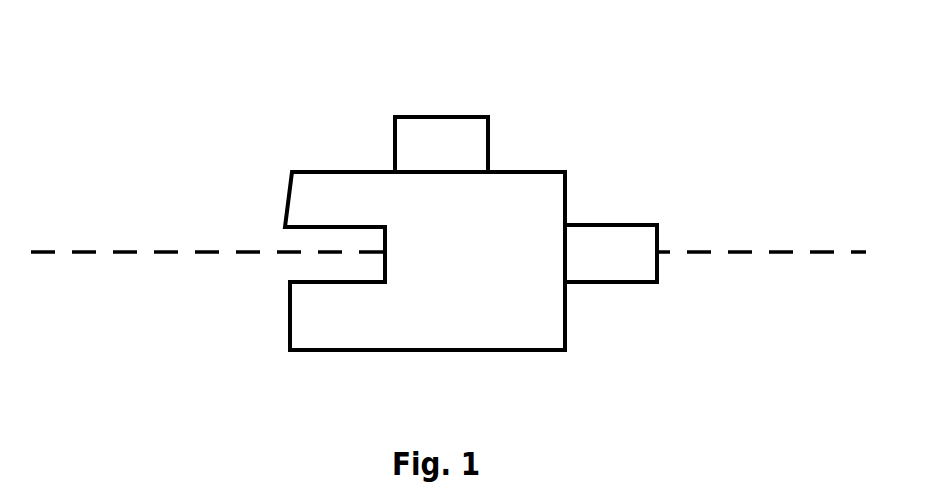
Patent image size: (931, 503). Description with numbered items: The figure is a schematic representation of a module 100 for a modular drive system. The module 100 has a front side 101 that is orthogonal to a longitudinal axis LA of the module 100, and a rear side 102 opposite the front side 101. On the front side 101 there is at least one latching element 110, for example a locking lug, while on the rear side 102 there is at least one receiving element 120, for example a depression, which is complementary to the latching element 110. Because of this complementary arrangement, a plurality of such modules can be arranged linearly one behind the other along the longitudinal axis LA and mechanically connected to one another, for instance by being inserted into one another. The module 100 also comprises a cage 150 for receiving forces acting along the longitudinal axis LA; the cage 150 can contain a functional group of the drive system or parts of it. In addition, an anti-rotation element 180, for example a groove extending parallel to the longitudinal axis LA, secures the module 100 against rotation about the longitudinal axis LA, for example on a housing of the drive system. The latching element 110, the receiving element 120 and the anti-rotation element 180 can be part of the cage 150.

The module 100 is at (448, 191).
The front side 101 is at (501, 227).
The rear side 102 is at (196, 324).
The latching element 110 is at (640, 270).
The receiving element 120 is at (308, 242).
The cage 150 is at (653, 328).
The anti-rotation element 180 is at (412, 163).
The longitudinal axis LA is at (448, 181).